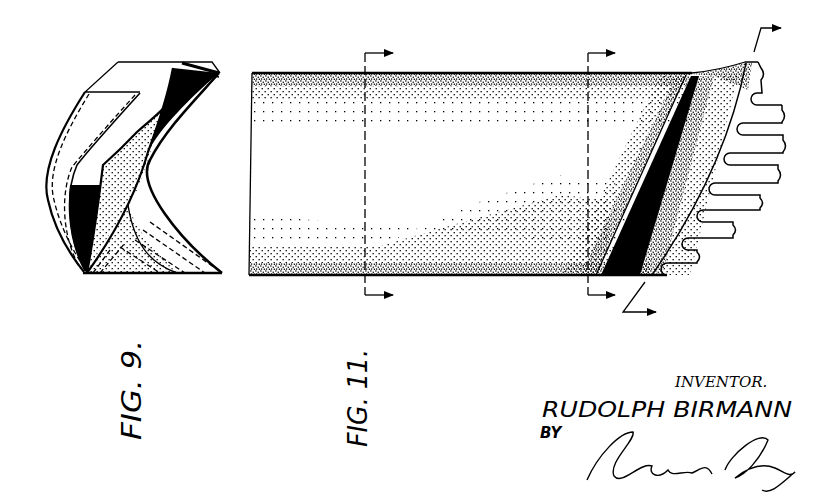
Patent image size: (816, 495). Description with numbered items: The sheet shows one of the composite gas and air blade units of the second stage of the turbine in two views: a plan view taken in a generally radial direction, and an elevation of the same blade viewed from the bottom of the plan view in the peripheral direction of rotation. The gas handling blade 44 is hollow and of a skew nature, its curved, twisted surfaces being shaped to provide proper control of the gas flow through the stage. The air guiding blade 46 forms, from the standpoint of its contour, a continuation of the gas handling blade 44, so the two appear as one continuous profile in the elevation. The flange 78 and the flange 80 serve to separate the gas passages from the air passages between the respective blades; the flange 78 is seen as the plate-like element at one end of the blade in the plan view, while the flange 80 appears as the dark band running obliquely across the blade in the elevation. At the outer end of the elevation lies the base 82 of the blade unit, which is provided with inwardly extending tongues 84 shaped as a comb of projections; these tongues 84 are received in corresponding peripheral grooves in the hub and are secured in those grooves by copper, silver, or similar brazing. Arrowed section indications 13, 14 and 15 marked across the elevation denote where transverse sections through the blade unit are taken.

In FIG. 11, the section line 13- 13 is at (392, 173).
In FIG. 11, the section line 14- 14 is at (589, 174).
In FIG. 11, the section line 15- 15 is at (702, 170).
In FIG. 9, the gas handling blade 44 is at (66, 250).
In FIG. 11, the gas handling blade 44 is at (322, 84).
In FIG. 11, the air guiding blade 46 is at (722, 73).
In FIG. 9, the flange 78 is at (90, 106).
In FIG. 9, the flange 80 is at (184, 247).
In FIG. 11, the flange 80 is at (658, 144).
In FIG. 11, the base of the blade unit 82 is at (767, 75).
In FIG. 11, the tongue 84 is at (766, 199).